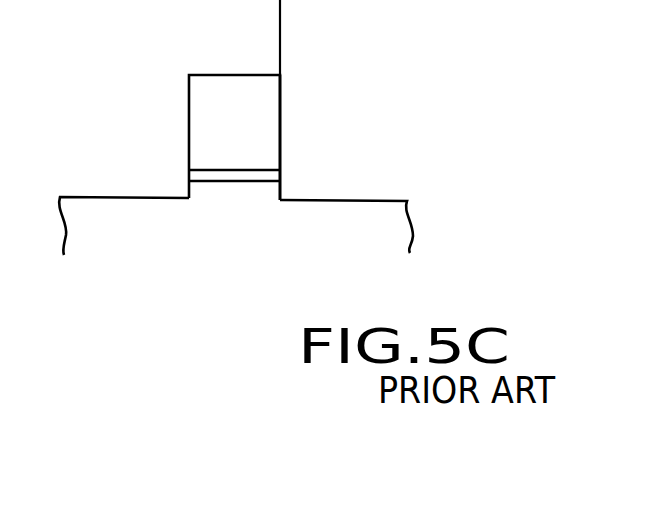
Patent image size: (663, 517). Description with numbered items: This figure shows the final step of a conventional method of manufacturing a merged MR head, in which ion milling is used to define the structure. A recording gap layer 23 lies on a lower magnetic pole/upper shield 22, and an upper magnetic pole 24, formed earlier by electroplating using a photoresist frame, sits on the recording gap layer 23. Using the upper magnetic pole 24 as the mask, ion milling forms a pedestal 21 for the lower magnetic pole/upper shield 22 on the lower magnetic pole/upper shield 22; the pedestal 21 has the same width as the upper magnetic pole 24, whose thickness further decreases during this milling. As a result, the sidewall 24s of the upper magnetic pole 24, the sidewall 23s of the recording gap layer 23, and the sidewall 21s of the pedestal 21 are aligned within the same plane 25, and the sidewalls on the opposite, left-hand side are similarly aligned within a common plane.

The pedestal 21 is at (236, 194).
The sidewall of the pedestal 21s is at (282, 193).
The lower magnetic pole/upper shield 22 is at (165, 245).
The recording gap layer 23 is at (213, 177).
The sidewall of the recording gap layer 23s is at (282, 168).
The upper magnetic pole 24 is at (207, 117).
The sidewall of the upper magnetic pole 24s is at (283, 118).
The plane 25 is at (281, 43).